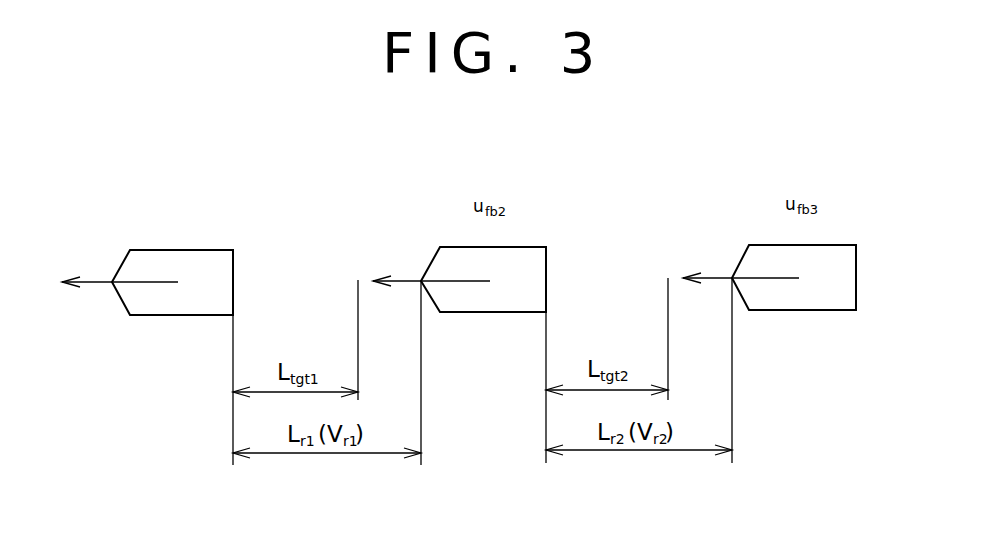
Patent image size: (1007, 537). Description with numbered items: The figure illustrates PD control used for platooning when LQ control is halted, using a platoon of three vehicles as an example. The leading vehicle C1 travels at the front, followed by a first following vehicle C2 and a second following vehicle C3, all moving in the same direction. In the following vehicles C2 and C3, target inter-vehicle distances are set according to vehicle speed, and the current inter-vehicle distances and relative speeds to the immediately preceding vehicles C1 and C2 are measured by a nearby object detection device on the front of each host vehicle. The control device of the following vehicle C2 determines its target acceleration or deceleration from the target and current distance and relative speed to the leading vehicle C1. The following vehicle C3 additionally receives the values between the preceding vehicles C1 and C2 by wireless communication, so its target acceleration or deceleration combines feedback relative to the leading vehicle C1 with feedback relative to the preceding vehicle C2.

The leading vehicle C1 is at (233, 268).
The following vehicle C2 is at (546, 266).
The following vehicle C3 is at (856, 263).